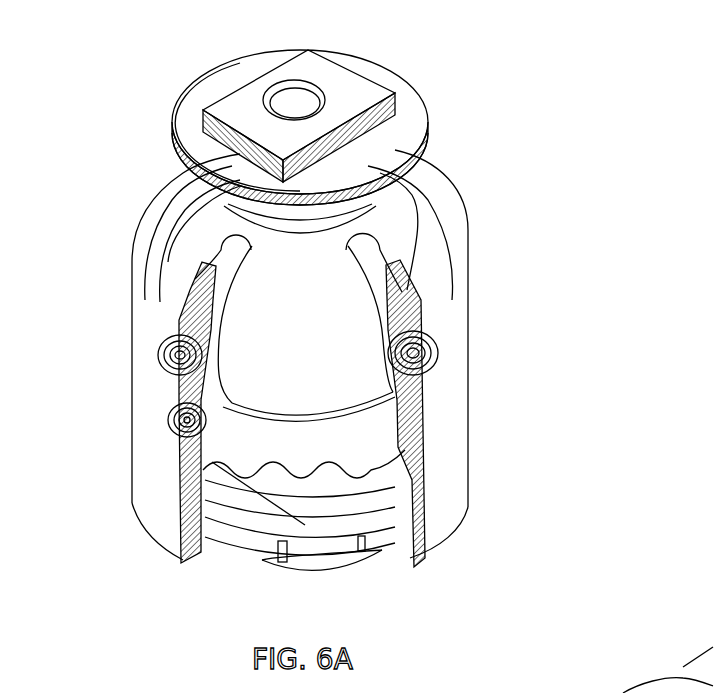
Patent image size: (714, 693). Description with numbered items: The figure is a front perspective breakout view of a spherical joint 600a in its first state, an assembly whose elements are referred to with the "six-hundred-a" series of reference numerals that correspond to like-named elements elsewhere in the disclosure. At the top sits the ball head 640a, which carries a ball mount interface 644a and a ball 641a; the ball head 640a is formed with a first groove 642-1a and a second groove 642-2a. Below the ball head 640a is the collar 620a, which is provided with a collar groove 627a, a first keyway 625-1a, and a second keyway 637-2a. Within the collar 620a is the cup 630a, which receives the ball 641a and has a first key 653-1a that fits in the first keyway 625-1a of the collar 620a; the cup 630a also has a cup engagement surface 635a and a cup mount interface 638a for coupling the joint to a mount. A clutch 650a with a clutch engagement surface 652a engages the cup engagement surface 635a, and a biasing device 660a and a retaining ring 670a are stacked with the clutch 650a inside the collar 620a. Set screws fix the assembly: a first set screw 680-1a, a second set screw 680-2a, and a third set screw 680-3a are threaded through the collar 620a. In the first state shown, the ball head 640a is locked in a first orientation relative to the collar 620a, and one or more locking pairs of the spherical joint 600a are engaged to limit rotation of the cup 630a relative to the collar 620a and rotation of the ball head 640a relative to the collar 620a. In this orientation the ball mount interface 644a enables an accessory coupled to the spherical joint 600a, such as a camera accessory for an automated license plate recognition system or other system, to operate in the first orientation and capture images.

The spherical joint 600a is at (540, 95).
The ball head 640a is at (157, 163).
The ball mount interface 644a is at (367, 53).
The ball 641a is at (425, 194).
The first groove 642-1a is at (383, 270).
The second groove 642-2a is at (222, 257).
The collar 620a is at (468, 290).
The collar groove 627a is at (178, 552).
The first keyway 625-1a is at (412, 530).
The second keyway 637-2a is at (185, 405).
The first set screw 680-1a is at (433, 362).
The second set screw 680-2a is at (180, 365).
The third set screw 680-3a is at (180, 425).
The cup 630a is at (380, 427).
The cup engagement surface 635a is at (385, 468).
The clutch engagement surface 652a is at (238, 478).
The clutch 650a is at (207, 503).
The first key 653-1a is at (420, 490).
The retaining ring 670a is at (242, 557).
The biasing device 660a is at (398, 527).
The cup mount interface 638a is at (325, 572).